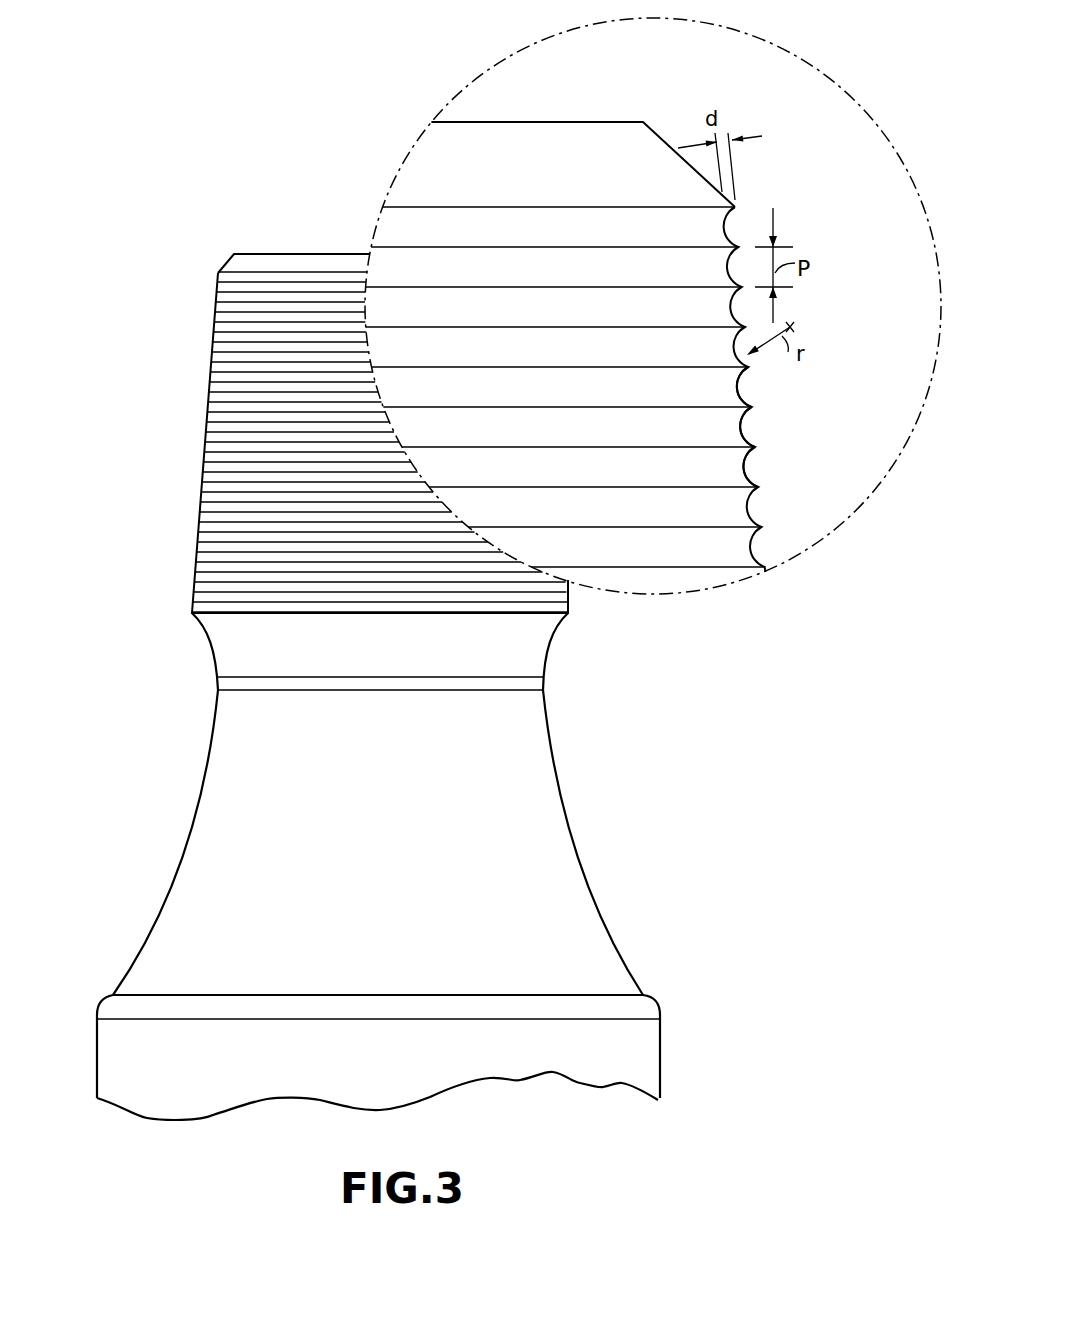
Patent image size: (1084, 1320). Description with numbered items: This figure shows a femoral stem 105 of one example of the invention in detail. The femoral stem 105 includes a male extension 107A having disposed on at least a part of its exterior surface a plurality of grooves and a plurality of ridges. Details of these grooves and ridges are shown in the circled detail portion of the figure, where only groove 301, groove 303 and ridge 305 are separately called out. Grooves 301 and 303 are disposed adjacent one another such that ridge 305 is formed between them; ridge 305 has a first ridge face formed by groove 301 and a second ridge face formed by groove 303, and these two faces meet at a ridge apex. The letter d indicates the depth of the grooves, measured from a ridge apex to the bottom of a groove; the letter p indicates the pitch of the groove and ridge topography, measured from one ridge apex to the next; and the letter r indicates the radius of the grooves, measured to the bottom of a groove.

The femoral stem 105 is at (160, 694).
The male extension 107A is at (185, 254).
The groove 301 is at (748, 422).
The groove 303 is at (752, 463).
The ridge 305 is at (757, 448).